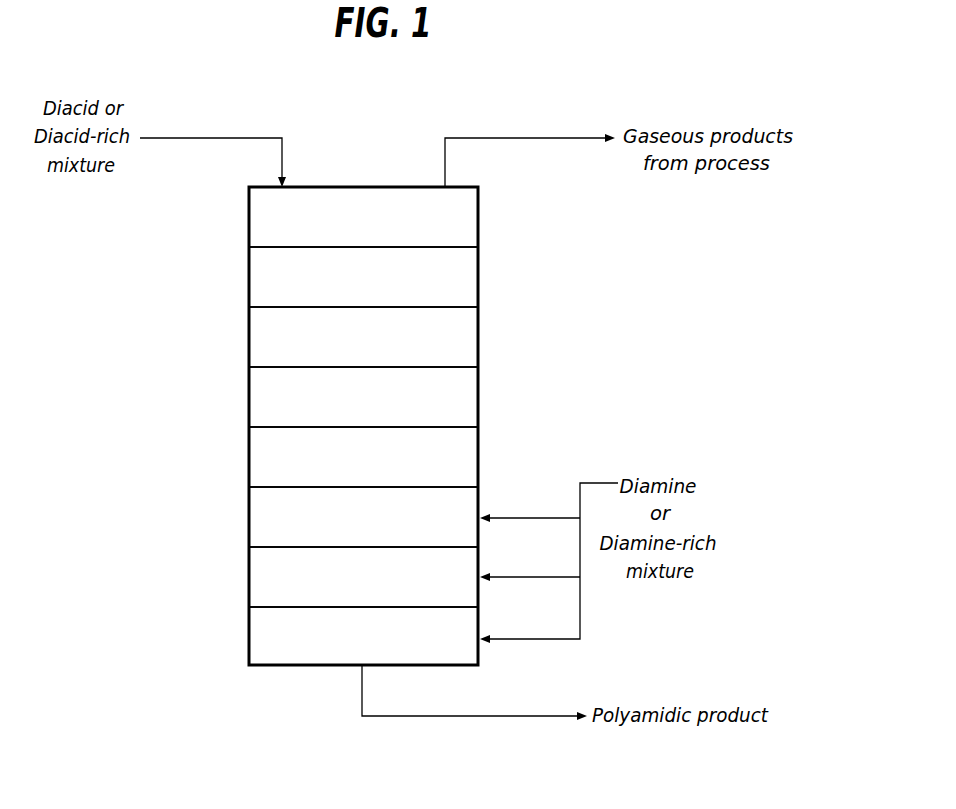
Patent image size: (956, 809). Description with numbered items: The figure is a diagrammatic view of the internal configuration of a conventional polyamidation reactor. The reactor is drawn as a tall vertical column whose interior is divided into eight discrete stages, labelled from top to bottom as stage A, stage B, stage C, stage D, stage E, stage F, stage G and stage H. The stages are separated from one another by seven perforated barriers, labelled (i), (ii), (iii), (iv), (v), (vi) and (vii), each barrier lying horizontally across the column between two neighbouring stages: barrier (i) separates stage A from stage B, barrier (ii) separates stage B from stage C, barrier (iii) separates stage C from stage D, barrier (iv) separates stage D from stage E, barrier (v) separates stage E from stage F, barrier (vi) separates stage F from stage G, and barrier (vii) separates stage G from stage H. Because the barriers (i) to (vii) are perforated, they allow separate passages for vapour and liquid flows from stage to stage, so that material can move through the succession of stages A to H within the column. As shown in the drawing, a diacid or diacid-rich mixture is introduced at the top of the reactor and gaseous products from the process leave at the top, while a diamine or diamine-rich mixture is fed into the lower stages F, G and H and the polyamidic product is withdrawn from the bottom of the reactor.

The perforated barrier i is at (249, 248).
The perforated barrier ii is at (249, 308).
The perforated barrier iii is at (249, 368).
The perforated barrier iv is at (249, 428).
The perforated barrier v is at (249, 488).
The perforated barrier vi is at (249, 548).
The perforated barrier vii is at (249, 608).
The stage A is at (478, 215).
The stage B is at (478, 275).
The stage C is at (478, 335).
The stage D is at (478, 395).
The stage E is at (478, 453).
The stage F is at (478, 493).
The stage G is at (478, 553).
The stage H is at (478, 613).